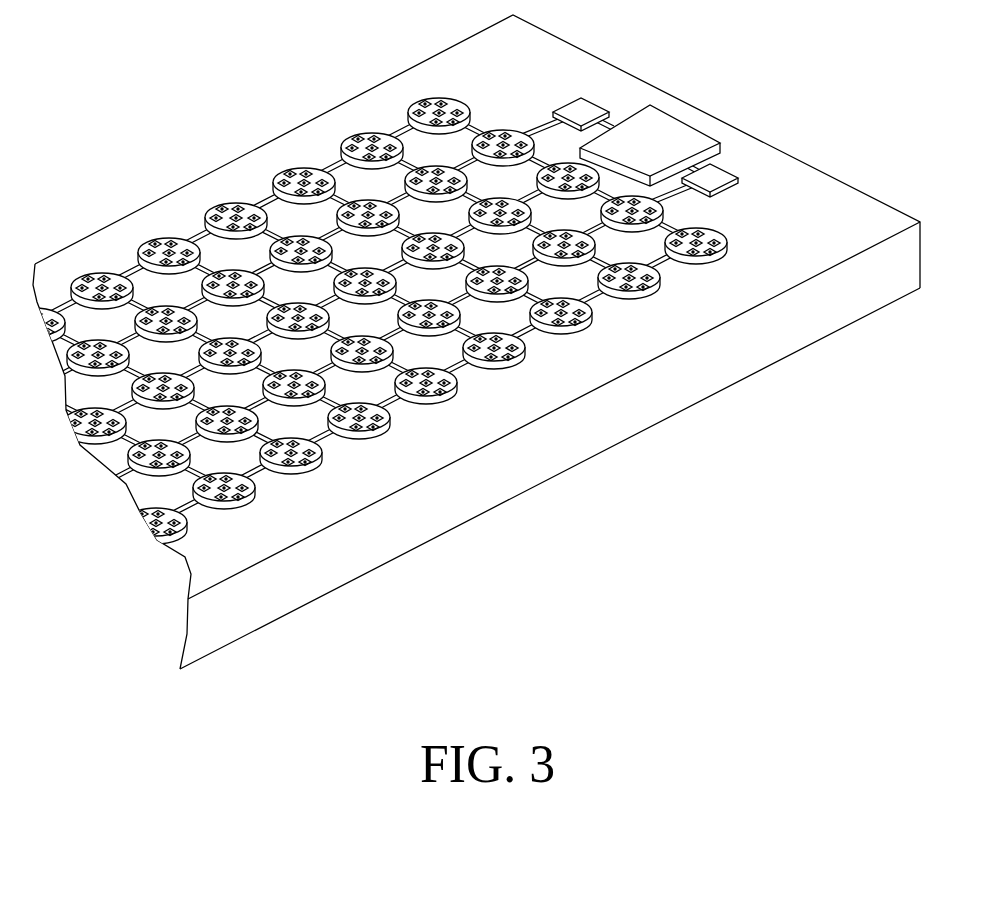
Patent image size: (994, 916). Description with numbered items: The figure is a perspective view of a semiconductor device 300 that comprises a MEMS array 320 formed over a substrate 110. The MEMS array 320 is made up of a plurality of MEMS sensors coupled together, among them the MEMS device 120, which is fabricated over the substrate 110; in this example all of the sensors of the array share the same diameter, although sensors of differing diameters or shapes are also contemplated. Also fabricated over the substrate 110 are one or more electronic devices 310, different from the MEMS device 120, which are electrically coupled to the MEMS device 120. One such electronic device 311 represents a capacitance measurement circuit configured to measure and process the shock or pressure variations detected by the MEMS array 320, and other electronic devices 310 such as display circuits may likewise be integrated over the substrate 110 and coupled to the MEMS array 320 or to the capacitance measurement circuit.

The substrate 110 is at (615, 423).
The MEMS device 120 is at (297, 177).
The semiconductor device 300 is at (476, 342).
The electronic devices 310 is at (690, 96).
The electronic device 311 is at (672, 137).
The MEMS array 320 is at (221, 192).